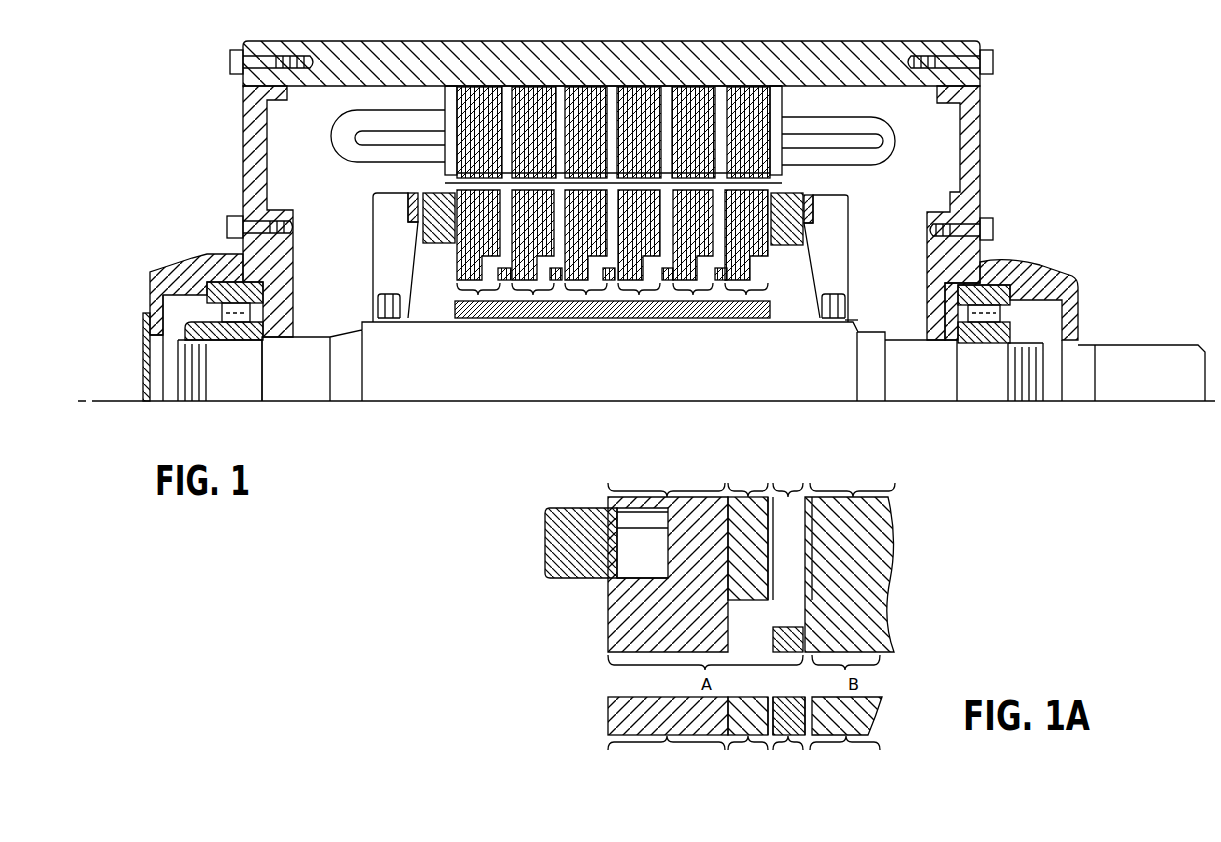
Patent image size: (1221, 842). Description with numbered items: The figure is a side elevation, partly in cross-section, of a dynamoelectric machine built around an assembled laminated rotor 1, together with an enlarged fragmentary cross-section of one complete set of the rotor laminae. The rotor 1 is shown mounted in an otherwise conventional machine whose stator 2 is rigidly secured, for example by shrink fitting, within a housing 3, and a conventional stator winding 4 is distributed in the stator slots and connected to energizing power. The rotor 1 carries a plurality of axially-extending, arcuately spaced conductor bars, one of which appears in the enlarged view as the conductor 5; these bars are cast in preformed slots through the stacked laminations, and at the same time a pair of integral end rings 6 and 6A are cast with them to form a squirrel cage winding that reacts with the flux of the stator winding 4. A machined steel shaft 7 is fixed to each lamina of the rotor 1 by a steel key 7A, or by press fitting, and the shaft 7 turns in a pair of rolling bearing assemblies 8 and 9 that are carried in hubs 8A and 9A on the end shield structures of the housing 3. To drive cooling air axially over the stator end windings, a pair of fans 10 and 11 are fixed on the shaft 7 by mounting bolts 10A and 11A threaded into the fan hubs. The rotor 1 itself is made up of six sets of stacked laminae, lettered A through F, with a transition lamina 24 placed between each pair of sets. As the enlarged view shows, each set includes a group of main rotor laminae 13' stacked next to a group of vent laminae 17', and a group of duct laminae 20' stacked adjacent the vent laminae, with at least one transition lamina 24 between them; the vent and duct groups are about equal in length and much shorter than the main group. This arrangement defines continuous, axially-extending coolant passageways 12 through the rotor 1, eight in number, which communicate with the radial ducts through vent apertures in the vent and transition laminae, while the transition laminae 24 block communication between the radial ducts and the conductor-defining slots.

In FIG. 1, the laminated rotor 1 is at (441, 269).
In FIG. 1, the stator 2 is at (792, 107).
In FIG. 1, the housing 3 is at (706, 42).
In FIG. 1, the stator winding 4 is at (892, 139).
In FIG. 1A, the conductor 5 is at (642, 545).
In FIG. 1, the end ring 6 is at (790, 192).
In FIG. 1, the end ring 6A is at (432, 192).
In FIG. 1A, the end ring 6A is at (560, 506).
In FIG. 1, the shaft 7 is at (874, 337).
In FIG. 1, the key 7A is at (852, 318).
In FIG. 1, the rolling bearing assembly 8 is at (210, 316).
In FIG. 1, the hub 8A is at (196, 262).
In FIG. 1, the rolling bearing assembly 9 is at (1006, 320).
In FIG. 1, the hub 9A is at (1020, 264).
In FIG. 1, the fan 10 is at (374, 222).
In FIG. 1, the mounting bolt 10A is at (384, 302).
In FIG. 1, the fan 11 is at (846, 218).
In FIG. 1, the mounting bolt 11A is at (844, 294).
In FIG. 1, the coolant passageway 12 is at (460, 298).
In FIG. 1A, the group of main rotor laminae 13' is at (751, 613).
In FIG. 1A, the group of vent laminae 17' is at (750, 616).
In FIG. 1A, the group of duct laminae 20' is at (777, 616).
In FIG. 1A, the transition lamina 24 is at (806, 752).